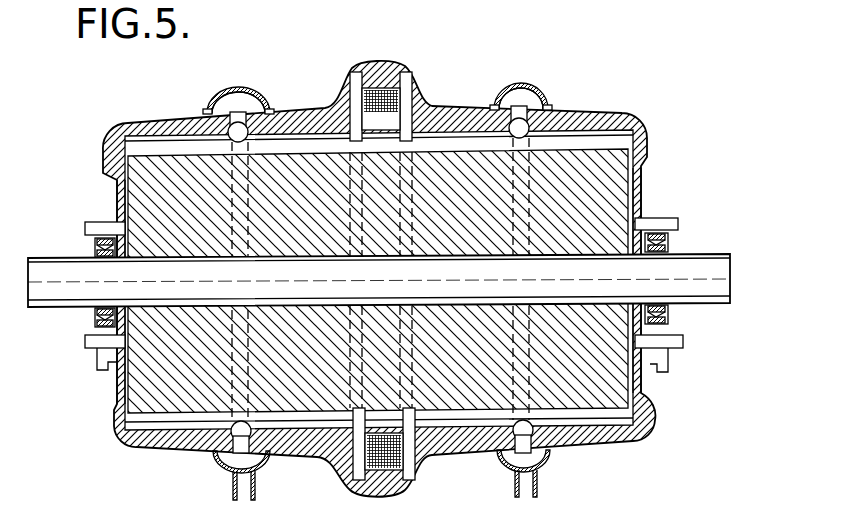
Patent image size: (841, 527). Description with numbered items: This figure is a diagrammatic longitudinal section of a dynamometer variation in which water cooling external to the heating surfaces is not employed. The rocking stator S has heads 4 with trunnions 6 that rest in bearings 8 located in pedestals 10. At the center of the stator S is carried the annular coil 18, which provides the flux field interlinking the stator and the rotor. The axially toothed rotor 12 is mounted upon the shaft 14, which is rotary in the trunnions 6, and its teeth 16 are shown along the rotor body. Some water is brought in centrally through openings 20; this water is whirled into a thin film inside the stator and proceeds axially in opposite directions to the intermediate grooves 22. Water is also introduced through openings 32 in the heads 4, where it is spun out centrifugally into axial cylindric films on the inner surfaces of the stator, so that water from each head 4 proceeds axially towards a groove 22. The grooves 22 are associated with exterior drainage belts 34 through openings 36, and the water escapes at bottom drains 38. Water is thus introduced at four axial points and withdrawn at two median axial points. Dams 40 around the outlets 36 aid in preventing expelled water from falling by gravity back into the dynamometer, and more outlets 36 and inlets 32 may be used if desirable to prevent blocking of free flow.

The rocking stator S is at (443, 112).
The heads 4 is at (115, 185).
The trunnions 6 is at (95, 252).
The bearings 8 is at (95, 241).
The pedestals 10 is at (103, 370).
The axially toothed rotor 12 is at (170, 380).
The shaft 14 is at (633, 284).
The teeth 16 is at (200, 148).
The annular coil 18 is at (376, 95).
The openings 20 is at (355, 75).
The intermediate grooves 22 is at (549, 108).
The openings 32 is at (90, 223).
The exterior drainage belts 34 is at (240, 88).
The openings 36 is at (509, 106).
The bottom drains 38 is at (248, 500).
The dams 40 is at (222, 106).